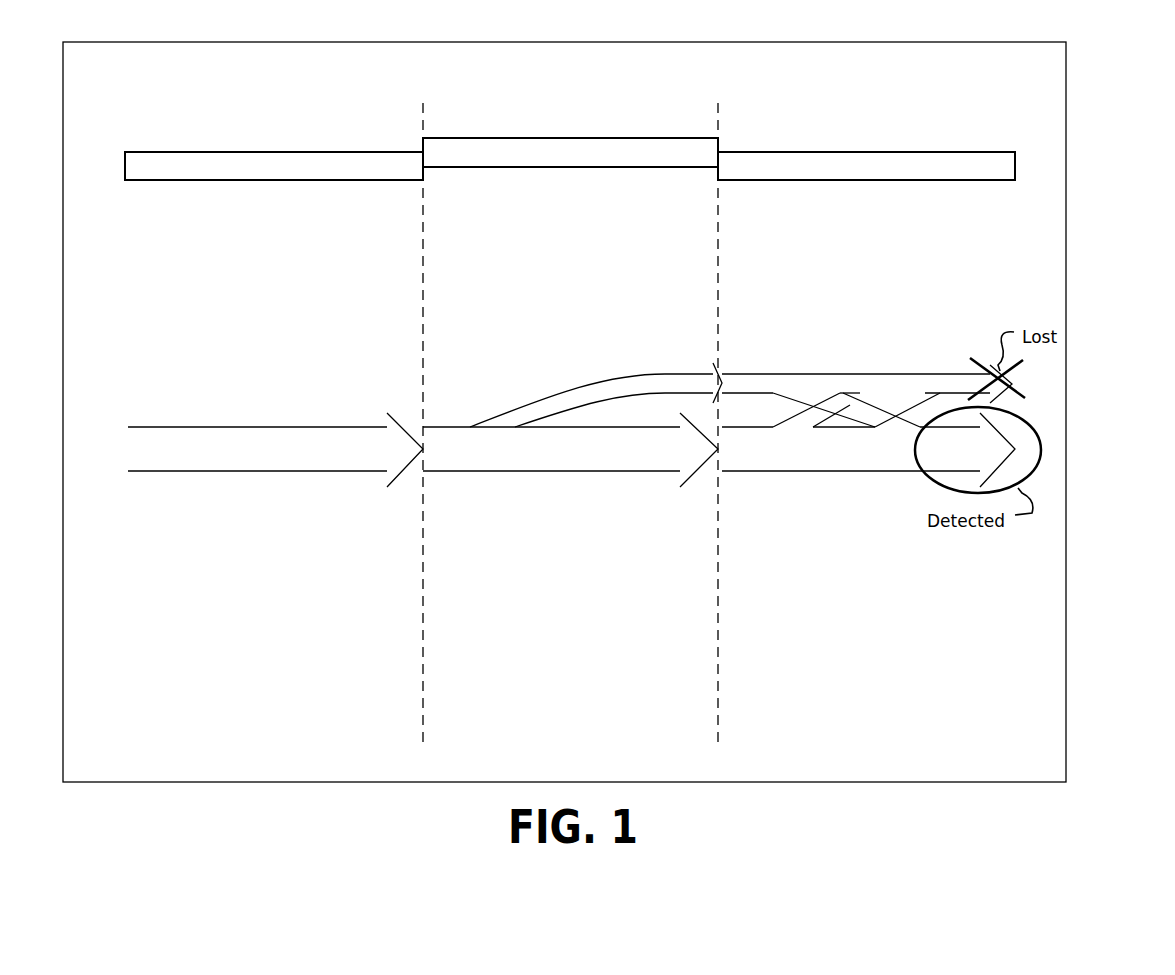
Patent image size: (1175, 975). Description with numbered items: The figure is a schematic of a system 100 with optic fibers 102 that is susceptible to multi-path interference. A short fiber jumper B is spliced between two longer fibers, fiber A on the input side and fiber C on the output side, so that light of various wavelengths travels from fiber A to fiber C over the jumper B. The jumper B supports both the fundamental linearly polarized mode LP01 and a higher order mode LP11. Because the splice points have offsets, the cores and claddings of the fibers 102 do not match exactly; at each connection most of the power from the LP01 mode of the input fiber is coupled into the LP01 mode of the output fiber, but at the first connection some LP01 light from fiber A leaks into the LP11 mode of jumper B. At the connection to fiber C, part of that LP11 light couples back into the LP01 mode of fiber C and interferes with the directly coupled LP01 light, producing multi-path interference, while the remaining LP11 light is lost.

The system 100 is at (1106, 84).
The optic fibers 102 is at (570, 137).
The fiber A is at (274, 166).
The short fiber jumper B is at (570, 152).
The fiber C is at (866, 166).
The fundamental linearly polarized mode LP01 is at (871, 471).
The higher order mode LP11 is at (846, 373).